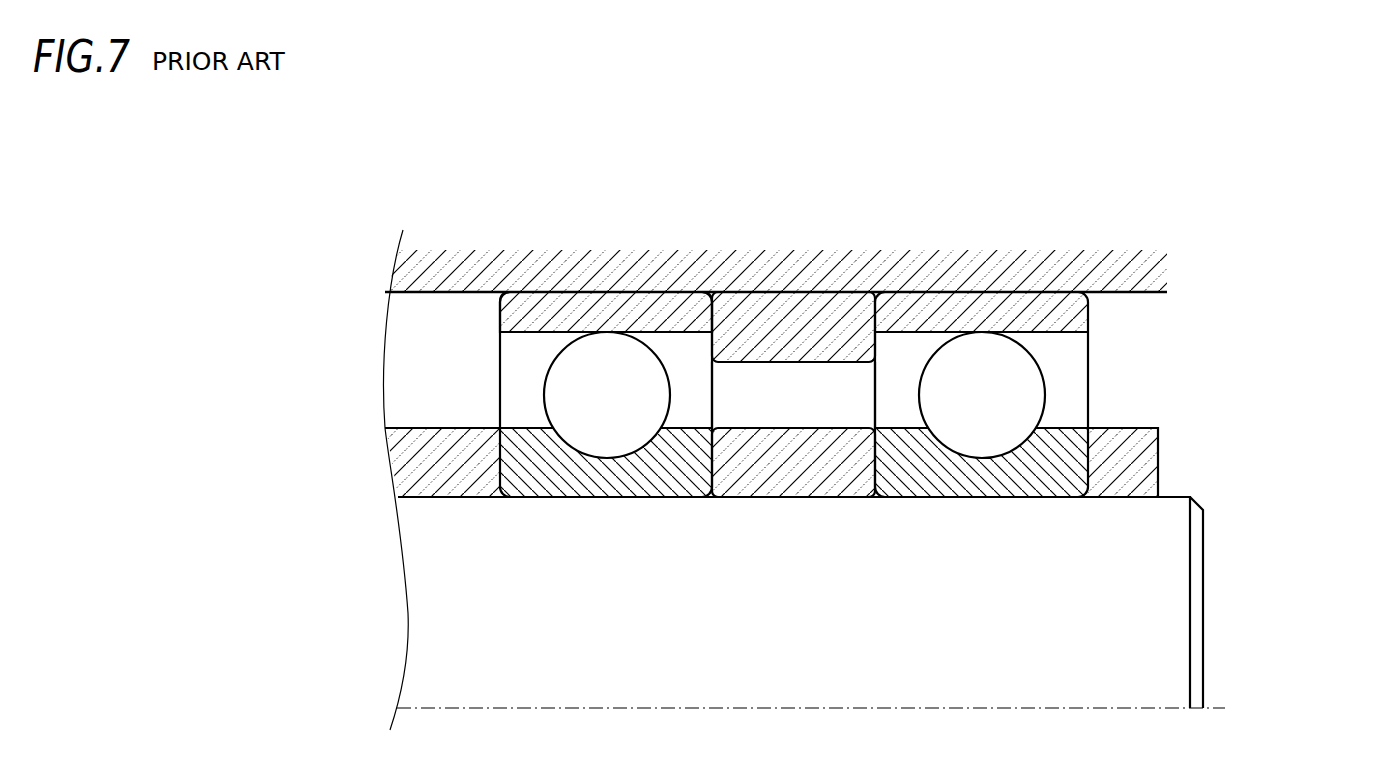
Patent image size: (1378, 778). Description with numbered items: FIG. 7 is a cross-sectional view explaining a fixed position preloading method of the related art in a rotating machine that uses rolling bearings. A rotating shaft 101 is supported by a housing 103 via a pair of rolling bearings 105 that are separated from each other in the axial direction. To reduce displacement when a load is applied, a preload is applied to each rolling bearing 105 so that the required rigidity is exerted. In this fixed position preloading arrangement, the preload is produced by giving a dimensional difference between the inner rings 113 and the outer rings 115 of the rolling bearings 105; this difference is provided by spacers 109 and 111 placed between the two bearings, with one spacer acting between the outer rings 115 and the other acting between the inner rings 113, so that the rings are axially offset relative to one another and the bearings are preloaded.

The rotating shaft 101 is at (1205, 588).
The housing 103 is at (1138, 272).
The rolling bearing 105 is at (784, 394).
The spacer 109 is at (821, 292).
The spacer 111 is at (761, 428).
The inner ring 113 is at (500, 462).
The outer ring 115 is at (500, 316).